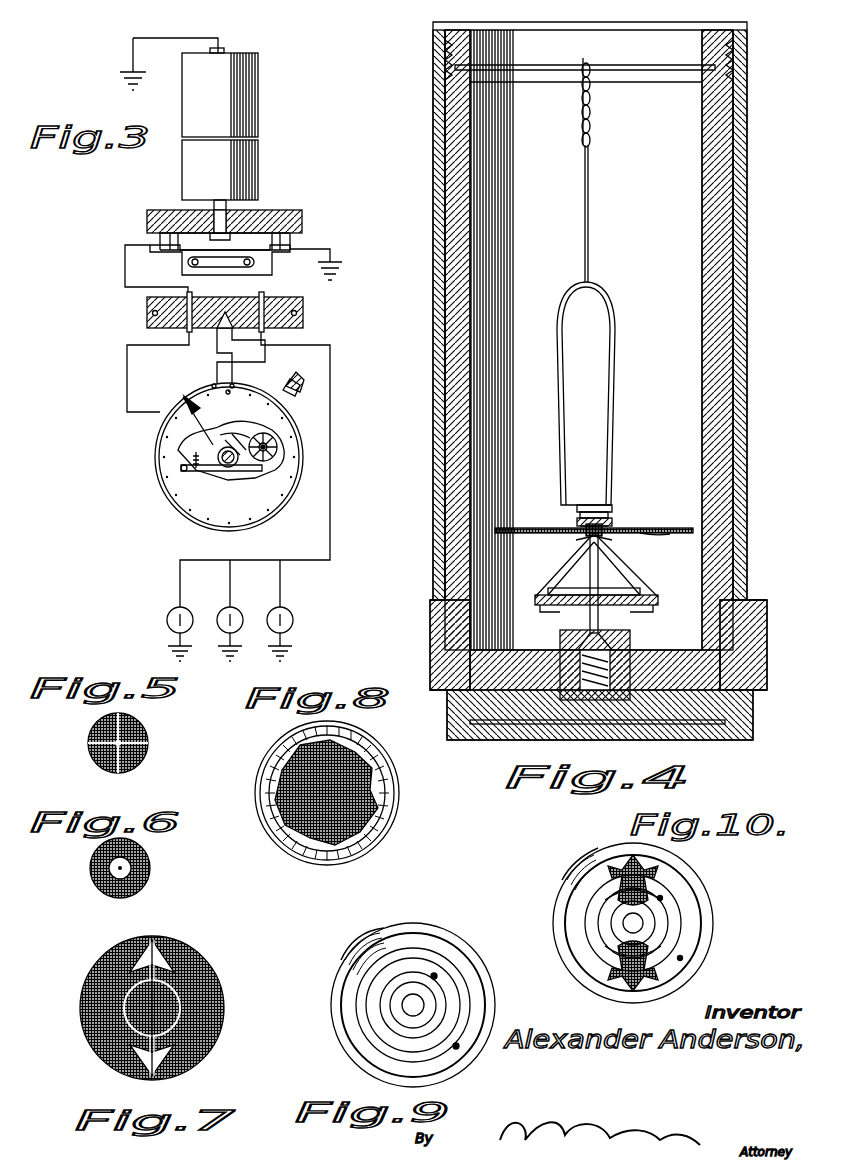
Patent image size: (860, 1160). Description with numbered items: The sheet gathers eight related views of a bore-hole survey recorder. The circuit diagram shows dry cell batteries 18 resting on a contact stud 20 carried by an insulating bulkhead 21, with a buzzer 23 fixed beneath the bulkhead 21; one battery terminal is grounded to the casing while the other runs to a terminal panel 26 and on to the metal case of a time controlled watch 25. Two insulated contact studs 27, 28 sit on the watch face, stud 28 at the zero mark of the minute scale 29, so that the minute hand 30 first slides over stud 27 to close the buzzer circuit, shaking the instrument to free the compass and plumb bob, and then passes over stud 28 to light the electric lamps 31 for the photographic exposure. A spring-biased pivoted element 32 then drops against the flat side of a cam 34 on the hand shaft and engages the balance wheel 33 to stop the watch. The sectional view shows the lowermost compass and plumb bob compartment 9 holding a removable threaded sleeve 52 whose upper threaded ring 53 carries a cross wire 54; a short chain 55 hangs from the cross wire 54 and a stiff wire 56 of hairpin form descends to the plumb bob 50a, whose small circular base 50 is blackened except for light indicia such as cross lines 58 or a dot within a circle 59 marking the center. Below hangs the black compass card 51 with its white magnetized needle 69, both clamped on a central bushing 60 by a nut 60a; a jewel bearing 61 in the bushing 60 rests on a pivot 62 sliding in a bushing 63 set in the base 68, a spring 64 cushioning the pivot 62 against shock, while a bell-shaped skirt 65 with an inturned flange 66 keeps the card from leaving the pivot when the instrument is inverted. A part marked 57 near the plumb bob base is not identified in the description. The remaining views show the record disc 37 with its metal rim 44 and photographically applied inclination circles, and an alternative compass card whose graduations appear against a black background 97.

In FIG. 4, the compass and plumb bob compartment 9 is at (747, 397).
In FIG. 3, the dry cell batteries 18 is at (258, 122).
In FIG. 3, the contact stud 20 is at (226, 205).
In FIG. 3, the bulkhead 21 is at (302, 216).
In FIG. 3, the buzzer 23 is at (268, 266).
In FIG. 3, the watch 25 is at (294, 495).
In FIG. 3, the terminal panel 26 is at (303, 318).
In FIG. 3, the contact stud 27 is at (225, 383).
In FIG. 3, the contact stud 28 is at (240, 383).
In FIG. 3, the minute scale 29 is at (178, 470).
In FIG. 3, the minute hand 30 is at (190, 420).
In FIG. 3, the electric lamps 31 is at (305, 598).
In FIG. 3, the pivotally mounted element 32 is at (210, 470).
In FIG. 3, the balance wheel 33 is at (277, 452).
In FIG. 3, the cam 34 is at (235, 462).
In FIG. 9, the record disc 37 is at (465, 1005).
In FIG. 10, the record disc 37 is at (688, 925).
In FIG. 9, the metal rim 44 is at (345, 962).
In FIG. 10, the metal rim 44 is at (565, 892).
In FIG. 4, the plumb bob base 50 is at (597, 520).
In FIG. 5, the plumb bob base 50 is at (96, 762).
In FIG. 6, the plumb bob base 50 is at (150, 870).
In FIG. 4, the plumb bob 50a is at (565, 455).
In FIG. 4, the compass card 51 is at (672, 534).
In FIG. 7, the compass card 51 is at (210, 985).
In FIG. 4, the tubular sleeve 52 is at (722, 332).
In FIG. 4, the threaded ring 53 is at (712, 45).
In FIG. 4, the cross wire 54 is at (690, 67).
In FIG. 4, the chain 55 is at (592, 102).
In FIG. 4, the stiff wire 56 is at (590, 207).
In FIG. 4, the washer 57 is at (575, 515).
In FIG. 4, the cross lines 58 is at (598, 508).
In FIG. 5, the cross lines 58 is at (145, 748).
In FIG. 6, the white dot and circle 59 is at (142, 852).
In FIG. 4, the central bushing 60 is at (600, 526).
In FIG. 4, the circular nut 60a is at (578, 524).
In FIG. 4, the jewel bearing 61 is at (610, 540).
In FIG. 4, the compass pivot 62 is at (620, 565).
In FIG. 4, the bushing 63 is at (605, 620).
In FIG. 4, the spring 64 is at (630, 650).
In FIG. 4, the bell-shaped skirt 65 is at (575, 560).
In FIG. 4, the inturned flange 66 is at (555, 610).
In FIG. 4, the base 68 is at (725, 735).
In FIG. 4, the magnetized needle 69 is at (670, 528).
In FIG. 7, the magnetized needle 69 is at (185, 955).
In FIG. 8, the black background 97 is at (399, 800).